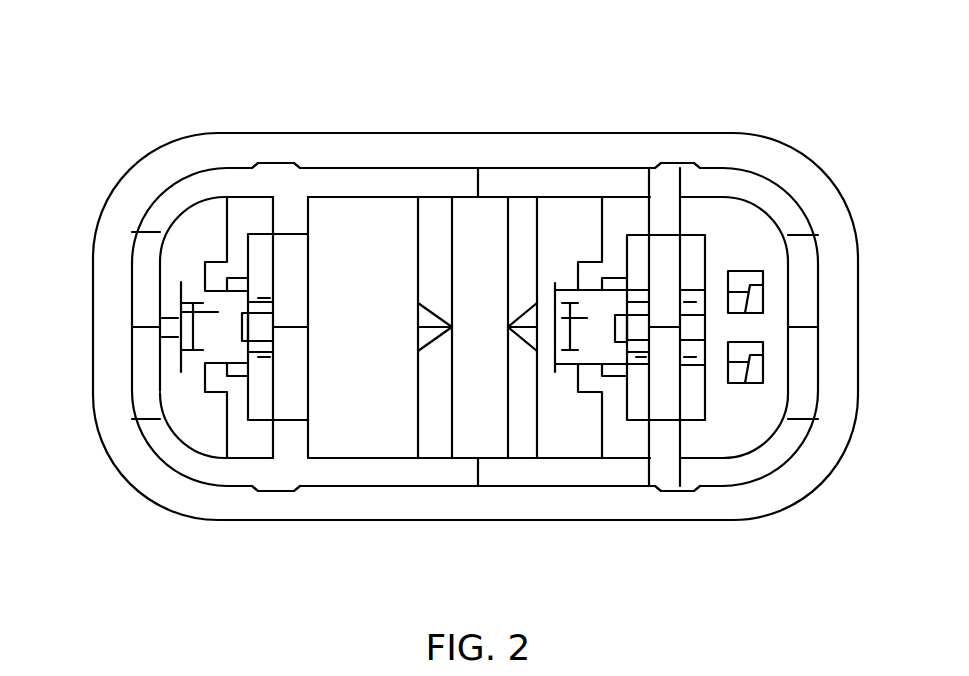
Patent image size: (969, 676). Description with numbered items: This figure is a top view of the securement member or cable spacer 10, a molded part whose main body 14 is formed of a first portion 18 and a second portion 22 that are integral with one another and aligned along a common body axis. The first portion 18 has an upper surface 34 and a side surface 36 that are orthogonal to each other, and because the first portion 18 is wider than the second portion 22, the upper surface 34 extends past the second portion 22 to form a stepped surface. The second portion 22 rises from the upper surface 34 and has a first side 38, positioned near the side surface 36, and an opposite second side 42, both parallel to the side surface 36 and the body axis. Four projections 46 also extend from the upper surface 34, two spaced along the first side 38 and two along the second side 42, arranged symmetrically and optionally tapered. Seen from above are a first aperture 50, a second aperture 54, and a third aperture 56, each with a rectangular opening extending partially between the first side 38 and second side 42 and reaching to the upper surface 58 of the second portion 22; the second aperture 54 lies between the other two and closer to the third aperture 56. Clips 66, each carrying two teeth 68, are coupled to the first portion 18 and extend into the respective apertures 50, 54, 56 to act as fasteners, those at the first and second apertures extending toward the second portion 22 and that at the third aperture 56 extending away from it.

The cable spacer 10 is at (774, 48).
The main body 14 is at (90, 131).
The first portion 18 is at (76, 325).
The second portion 22 is at (835, 300).
The upper surface 34 is at (125, 437).
The side surface 36 is at (470, 488).
The first side 38 is at (560, 488).
The second side 42 is at (573, 168).
The projections 46 is at (268, 163).
The first aperture 50 is at (263, 240).
The second aperture 54 is at (641, 240).
The third aperture 56 is at (690, 240).
The upper surface of the second portion 58 is at (785, 214).
The clips 66 is at (185, 310).
The teeth 68 is at (637, 298).